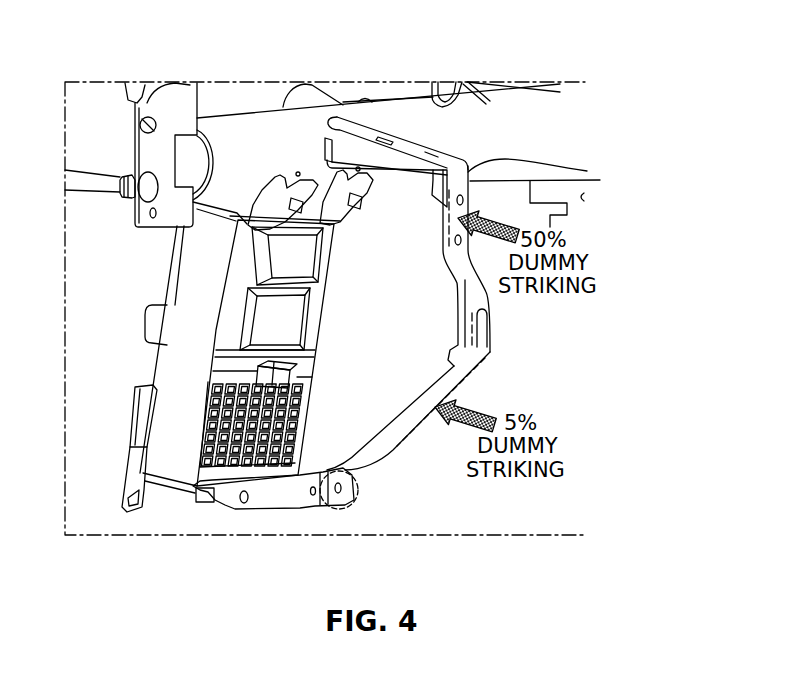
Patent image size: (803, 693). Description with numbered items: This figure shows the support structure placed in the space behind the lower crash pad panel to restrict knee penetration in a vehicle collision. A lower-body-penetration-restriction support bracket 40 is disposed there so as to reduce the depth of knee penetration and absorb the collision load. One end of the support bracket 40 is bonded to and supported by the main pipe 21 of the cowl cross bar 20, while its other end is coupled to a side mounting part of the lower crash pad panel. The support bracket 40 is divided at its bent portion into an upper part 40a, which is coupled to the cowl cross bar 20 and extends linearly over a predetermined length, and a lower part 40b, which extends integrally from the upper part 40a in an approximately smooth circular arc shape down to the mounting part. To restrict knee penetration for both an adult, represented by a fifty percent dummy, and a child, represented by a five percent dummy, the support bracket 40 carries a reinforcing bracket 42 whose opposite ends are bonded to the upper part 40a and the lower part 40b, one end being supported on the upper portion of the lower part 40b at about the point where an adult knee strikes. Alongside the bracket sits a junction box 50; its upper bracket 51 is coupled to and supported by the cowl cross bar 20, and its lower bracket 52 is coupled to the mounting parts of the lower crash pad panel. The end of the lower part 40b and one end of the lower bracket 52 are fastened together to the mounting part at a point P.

The cowl cross bar 20 is at (386, 154).
The main pipe 21 is at (563, 122).
The lower-body-penetration-restriction support bracket 40 is at (485, 252).
The upper part 40a is at (407, 150).
The lower part 40b is at (483, 302).
The reinforcing bracket 42 is at (437, 193).
The junction box 50 is at (200, 311).
The upper bracket 51 is at (270, 195).
The lower bracket 52 is at (290, 493).
The point P is at (345, 490).